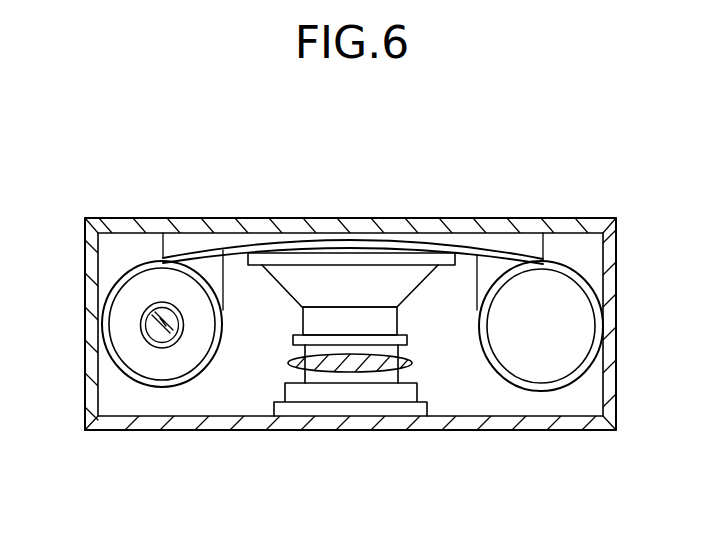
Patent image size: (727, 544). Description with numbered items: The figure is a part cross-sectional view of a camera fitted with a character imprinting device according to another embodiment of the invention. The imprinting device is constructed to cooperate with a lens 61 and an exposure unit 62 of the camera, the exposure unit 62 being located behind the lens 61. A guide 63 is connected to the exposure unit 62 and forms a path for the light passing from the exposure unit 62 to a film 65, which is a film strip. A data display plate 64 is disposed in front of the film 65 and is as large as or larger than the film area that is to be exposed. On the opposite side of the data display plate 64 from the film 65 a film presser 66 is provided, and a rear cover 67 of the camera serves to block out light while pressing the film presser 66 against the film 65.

The lens 61 is at (370, 363).
The exposure unit 62 is at (320, 338).
The guide 63 is at (372, 268).
The data display plate 64 is at (439, 256).
The film 65 is at (252, 250).
The film presser 66 is at (522, 247).
The rear cover 67 is at (320, 228).